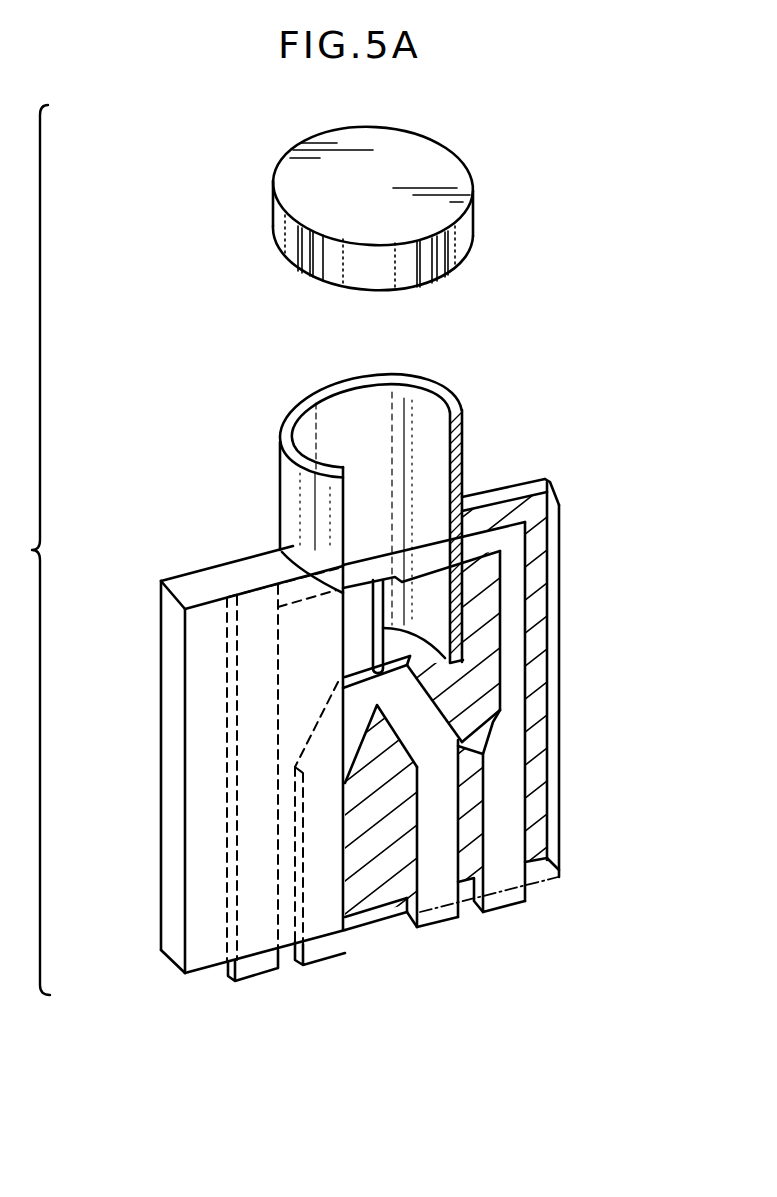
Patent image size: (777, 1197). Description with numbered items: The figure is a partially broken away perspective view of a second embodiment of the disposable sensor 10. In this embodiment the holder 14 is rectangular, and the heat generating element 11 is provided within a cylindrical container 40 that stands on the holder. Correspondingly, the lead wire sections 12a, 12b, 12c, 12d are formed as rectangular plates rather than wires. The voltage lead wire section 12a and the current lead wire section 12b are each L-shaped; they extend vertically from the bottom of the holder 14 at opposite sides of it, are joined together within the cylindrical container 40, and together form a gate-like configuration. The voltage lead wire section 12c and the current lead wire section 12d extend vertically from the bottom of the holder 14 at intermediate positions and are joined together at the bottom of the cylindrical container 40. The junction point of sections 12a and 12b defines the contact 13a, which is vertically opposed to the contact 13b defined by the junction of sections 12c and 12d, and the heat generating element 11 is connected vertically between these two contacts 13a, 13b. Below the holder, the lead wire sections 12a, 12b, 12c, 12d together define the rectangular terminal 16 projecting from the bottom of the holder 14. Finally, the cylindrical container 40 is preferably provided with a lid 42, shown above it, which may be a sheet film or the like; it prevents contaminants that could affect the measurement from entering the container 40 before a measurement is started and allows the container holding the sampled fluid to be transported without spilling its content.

The disposable sensor 10 is at (266, 373).
The heat generating element 11 is at (372, 632).
The voltage lead wire section 12a is at (512, 563).
The current lead wire section 12b is at (254, 970).
The voltage lead wire section 12c is at (323, 953).
The current lead wire section 12d is at (434, 920).
The contact 13a is at (393, 568).
The contact 13b is at (392, 690).
The holder 14 is at (174, 808).
The rectangular terminal 16 is at (538, 938).
The cylindrical container 40 is at (283, 453).
The lid 42 is at (463, 178).